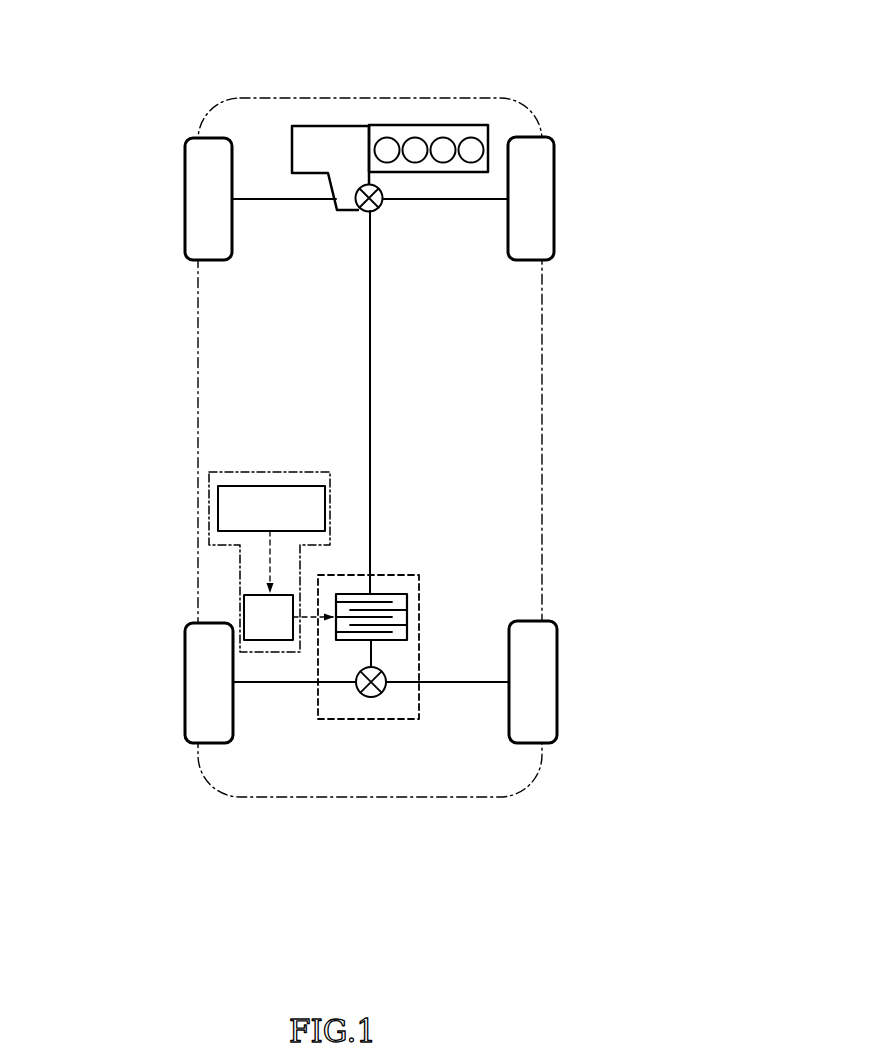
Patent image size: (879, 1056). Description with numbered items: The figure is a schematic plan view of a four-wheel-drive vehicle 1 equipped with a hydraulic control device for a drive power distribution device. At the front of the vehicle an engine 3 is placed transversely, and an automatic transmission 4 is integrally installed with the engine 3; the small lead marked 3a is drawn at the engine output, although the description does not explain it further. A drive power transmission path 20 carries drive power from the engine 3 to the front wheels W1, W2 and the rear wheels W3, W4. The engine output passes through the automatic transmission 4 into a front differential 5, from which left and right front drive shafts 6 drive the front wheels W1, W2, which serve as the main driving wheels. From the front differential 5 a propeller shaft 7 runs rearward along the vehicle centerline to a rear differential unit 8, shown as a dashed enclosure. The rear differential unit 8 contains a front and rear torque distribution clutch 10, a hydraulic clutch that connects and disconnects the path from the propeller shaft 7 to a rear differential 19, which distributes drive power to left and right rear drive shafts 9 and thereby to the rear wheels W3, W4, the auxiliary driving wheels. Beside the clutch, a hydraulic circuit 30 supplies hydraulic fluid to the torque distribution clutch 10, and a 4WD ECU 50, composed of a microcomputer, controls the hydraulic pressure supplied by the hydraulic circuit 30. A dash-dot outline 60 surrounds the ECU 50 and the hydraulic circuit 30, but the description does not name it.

The four-wheel-drive vehicle 1 is at (537, 91).
The engine 3 is at (432, 125).
The engine output shaft 3a is at (373, 178).
The automatic transmission 4 is at (318, 126).
The front differential 5 is at (380, 211).
The front drive shaft 6 is at (310, 201).
The propeller shaft 7 is at (377, 452).
The rear differential unit 8 is at (402, 573).
The rear drive shaft 9 is at (306, 684).
The front and rear torque distribution clutch 10 is at (410, 613).
The rear differential 19 is at (375, 700).
The drive power transmission path 20 is at (364, 358).
The hydraulic circuit 30 is at (243, 610).
The 4WD ECU 50 is at (305, 486).
The control device 60 is at (241, 472).
The front wheel W1 is at (184, 176).
The front wheel W2 is at (555, 172).
The rear wheel W3 is at (184, 672).
The rear wheel W4 is at (558, 675).